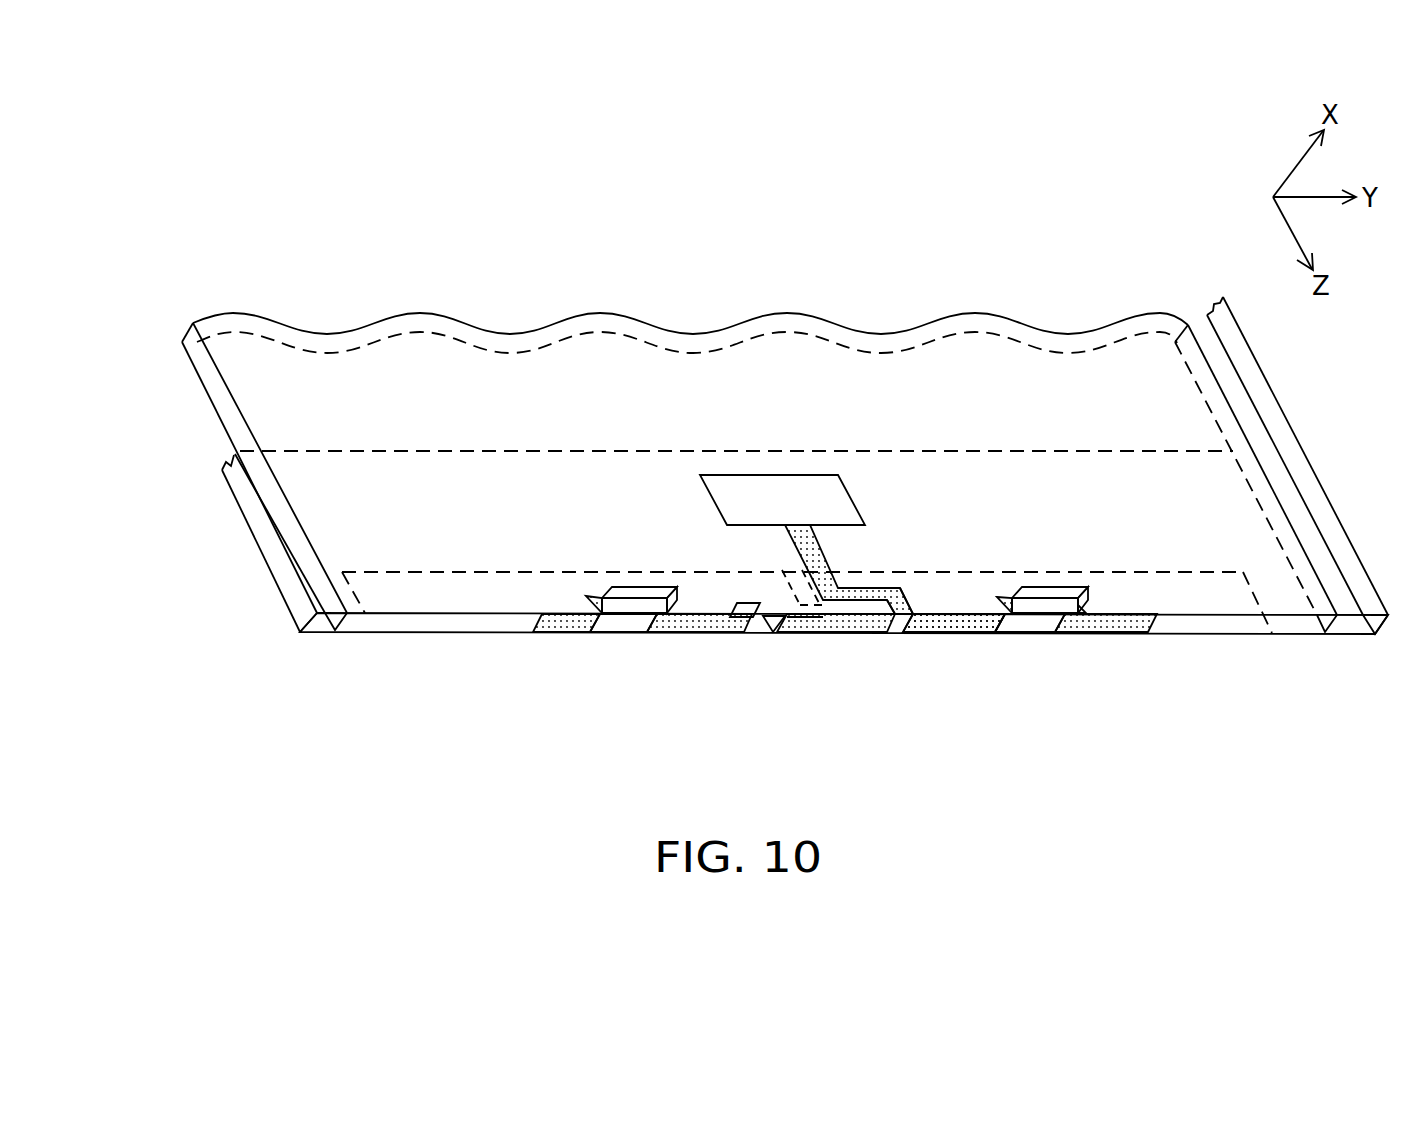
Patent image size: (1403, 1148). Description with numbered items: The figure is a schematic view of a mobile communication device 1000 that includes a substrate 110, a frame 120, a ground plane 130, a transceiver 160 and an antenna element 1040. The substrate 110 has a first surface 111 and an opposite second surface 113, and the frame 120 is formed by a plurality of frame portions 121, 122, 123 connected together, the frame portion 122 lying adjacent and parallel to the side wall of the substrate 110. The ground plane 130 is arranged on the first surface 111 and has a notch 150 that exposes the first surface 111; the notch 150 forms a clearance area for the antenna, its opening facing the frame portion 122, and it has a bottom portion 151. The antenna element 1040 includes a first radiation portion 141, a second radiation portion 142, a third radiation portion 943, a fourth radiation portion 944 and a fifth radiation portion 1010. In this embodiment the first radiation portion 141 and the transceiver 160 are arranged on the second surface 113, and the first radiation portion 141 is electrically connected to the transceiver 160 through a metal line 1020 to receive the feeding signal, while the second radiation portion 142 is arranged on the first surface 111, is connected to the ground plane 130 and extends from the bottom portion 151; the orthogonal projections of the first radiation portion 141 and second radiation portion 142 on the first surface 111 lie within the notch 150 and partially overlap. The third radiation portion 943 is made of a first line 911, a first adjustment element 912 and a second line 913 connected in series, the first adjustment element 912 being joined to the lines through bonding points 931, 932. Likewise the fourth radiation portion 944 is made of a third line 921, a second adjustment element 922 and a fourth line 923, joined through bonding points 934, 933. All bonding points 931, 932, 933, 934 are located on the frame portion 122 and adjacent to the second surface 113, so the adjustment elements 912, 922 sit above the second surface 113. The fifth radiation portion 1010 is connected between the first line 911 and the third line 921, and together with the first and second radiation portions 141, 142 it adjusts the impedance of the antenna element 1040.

The substrate 110 is at (670, 320).
The first surface 111 is at (208, 402).
The second surface 113 is at (192, 361).
The frame 120 is at (218, 467).
The frame portion 121 is at (293, 590).
The frame portion 122 is at (317, 633).
The frame portion 123 is at (1320, 503).
The ground plane 130 is at (412, 460).
The first radiation portion 141 is at (900, 598).
The second radiation portion 142 is at (757, 606).
The notch 150 is at (408, 598).
The bottom portion 151 is at (453, 573).
The transceiver 160 is at (864, 502).
The first line 911 is at (977, 628).
The first adjustment element 912 is at (1043, 611).
The second line 913 is at (1105, 626).
The third line 921 is at (689, 628).
The second adjustment element 922 is at (628, 609).
The fourth line 923 is at (563, 628).
The bonding point 931 is at (1013, 590).
The bonding point 932 is at (1083, 608).
The bonding point 933 is at (673, 587).
The bonding point 934 is at (596, 588).
The third radiation portion 943 is at (1110, 688).
The fourth radiation portion 944 is at (527, 688).
The mobile communication device 1000 is at (1330, 727).
The fifth radiation portion 1010 is at (846, 630).
The metal line 1020 is at (815, 557).
The antenna element 1040 is at (782, 710).